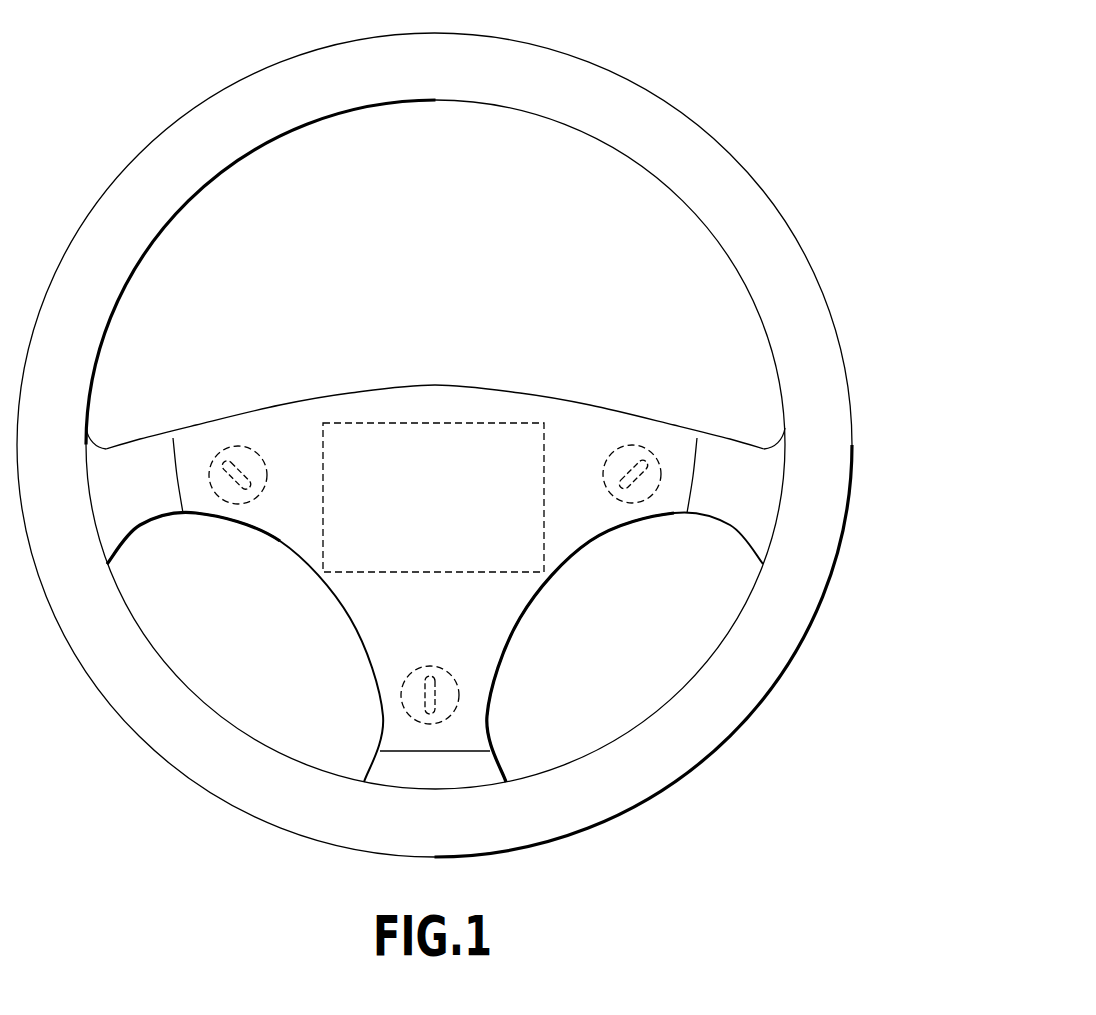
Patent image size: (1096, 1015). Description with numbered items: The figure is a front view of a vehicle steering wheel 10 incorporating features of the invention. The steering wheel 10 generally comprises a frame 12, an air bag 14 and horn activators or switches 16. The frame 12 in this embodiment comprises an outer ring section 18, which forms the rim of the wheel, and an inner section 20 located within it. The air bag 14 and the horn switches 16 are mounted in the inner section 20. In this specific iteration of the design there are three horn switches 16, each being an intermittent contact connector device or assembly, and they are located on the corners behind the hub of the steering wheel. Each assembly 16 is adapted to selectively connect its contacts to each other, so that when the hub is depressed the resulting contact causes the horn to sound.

The vehicle steering wheel 10 is at (690, 58).
The frame 12 is at (726, 149).
The outer ring section 18 is at (822, 287).
The inner section 20 is at (358, 386).
The air bag 14 is at (428, 452).
The horn switches 16 is at (227, 462).